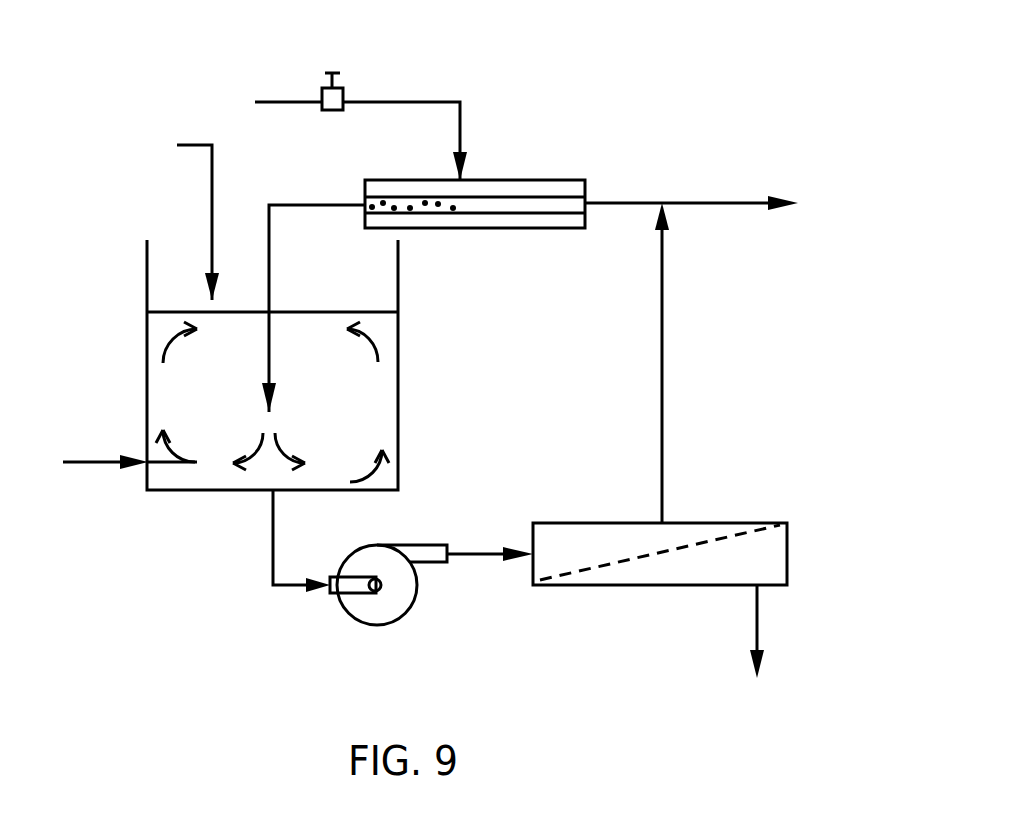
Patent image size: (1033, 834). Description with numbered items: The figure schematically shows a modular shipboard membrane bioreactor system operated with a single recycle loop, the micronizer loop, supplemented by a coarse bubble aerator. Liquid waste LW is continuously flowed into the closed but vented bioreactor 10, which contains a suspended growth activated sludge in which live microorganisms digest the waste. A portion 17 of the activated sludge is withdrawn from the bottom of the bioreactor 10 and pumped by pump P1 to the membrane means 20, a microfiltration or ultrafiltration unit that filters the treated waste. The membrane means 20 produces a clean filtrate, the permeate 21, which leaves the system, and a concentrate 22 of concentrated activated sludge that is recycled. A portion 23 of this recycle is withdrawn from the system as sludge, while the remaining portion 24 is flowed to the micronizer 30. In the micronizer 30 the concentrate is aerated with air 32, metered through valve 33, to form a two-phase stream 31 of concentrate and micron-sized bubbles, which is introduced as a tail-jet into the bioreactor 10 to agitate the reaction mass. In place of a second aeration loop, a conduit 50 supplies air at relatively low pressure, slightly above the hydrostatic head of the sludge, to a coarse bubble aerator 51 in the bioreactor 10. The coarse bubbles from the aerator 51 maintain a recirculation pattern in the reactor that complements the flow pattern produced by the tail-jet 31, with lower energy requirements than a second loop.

The bioreactor 10 is at (272, 365).
The liquid waste LW is at (212, 195).
The two-phase stream 31 is at (270, 343).
The micronizer 30 is at (493, 180).
The air 32 is at (293, 100).
The valve 33 is at (330, 70).
The remaining portion of recycle 24 is at (617, 203).
The portion of recycle withdrawn as sludge 23 is at (717, 203).
The concentrate recycle 22 is at (662, 398).
The membrane means 20 is at (645, 585).
The permeate 21 is at (757, 625).
The pump P1 is at (410, 603).
The portion of activated sludge 17 is at (268, 578).
The conduit 50 is at (92, 463).
The coarse bubble aerator 51 is at (162, 462).